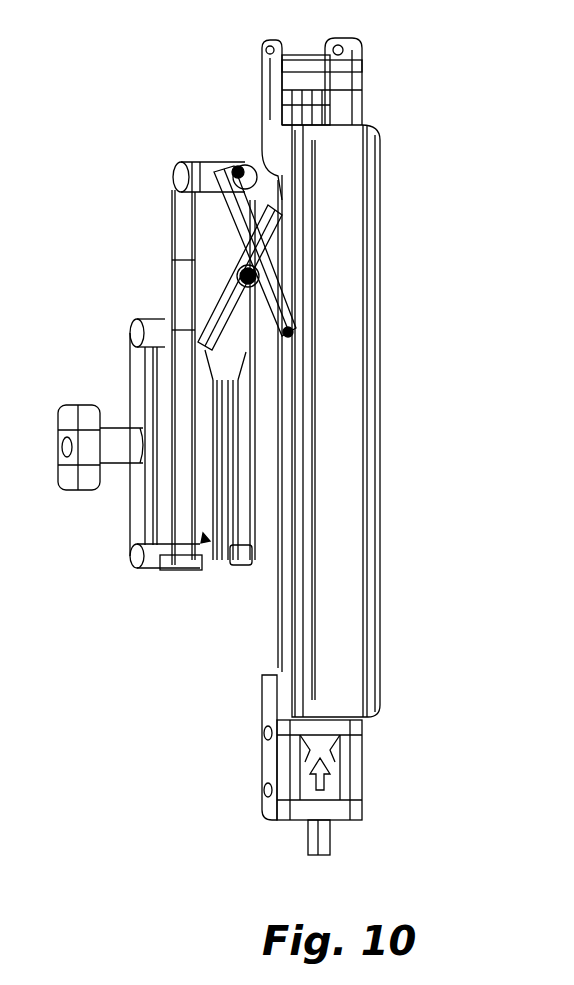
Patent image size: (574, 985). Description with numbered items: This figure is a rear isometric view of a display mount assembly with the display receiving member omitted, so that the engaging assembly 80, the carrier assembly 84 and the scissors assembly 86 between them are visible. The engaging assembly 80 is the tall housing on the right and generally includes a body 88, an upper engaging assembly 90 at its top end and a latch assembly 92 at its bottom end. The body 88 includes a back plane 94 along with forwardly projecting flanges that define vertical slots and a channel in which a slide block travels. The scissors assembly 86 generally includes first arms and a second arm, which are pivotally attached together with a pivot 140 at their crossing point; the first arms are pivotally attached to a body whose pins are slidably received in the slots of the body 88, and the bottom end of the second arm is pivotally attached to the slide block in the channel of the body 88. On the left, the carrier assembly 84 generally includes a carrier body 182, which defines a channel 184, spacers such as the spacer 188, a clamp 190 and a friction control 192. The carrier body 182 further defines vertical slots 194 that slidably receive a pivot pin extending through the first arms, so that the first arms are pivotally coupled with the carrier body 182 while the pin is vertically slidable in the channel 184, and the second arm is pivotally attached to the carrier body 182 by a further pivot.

The engaging assembly 80 is at (343, 200).
The carrier assembly 84 is at (157, 567).
The scissors assembly 86 is at (225, 163).
The body 88 is at (345, 382).
The upper engaging assembly 90 is at (270, 48).
The latch assembly 92 is at (280, 770).
The back plane 94 is at (348, 630).
The pivot 140 is at (237, 276).
The carrier body 182 is at (180, 252).
The channel 184 is at (215, 557).
The spacer 188 is at (167, 380).
The clamp 190 is at (142, 505).
The friction control 192 is at (80, 408).
The vertical slots 194 is at (212, 497).